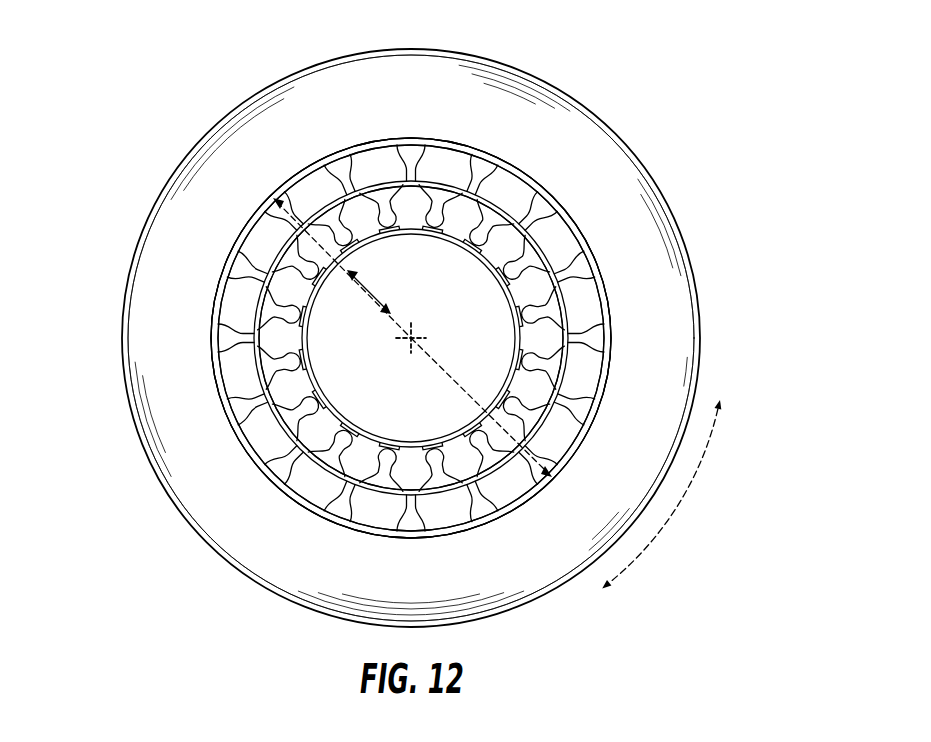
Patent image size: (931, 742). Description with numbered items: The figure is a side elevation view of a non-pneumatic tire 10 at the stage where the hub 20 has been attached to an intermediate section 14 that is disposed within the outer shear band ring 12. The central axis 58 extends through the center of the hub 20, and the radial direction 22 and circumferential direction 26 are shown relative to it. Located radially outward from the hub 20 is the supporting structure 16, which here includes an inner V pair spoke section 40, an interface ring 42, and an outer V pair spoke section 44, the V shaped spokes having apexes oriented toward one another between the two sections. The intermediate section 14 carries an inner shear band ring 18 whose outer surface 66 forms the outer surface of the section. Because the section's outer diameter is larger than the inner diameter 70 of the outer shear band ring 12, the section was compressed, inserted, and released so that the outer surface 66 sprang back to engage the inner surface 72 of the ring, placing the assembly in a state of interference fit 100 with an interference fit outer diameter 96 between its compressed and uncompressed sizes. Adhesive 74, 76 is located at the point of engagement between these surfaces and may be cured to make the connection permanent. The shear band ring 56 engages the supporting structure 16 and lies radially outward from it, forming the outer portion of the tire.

The non-pneumatic tire 10 is at (168, 78).
The outer shear band ring 12 is at (510, 578).
The intermediate section 14 is at (370, 536).
The supporting structure 16 is at (508, 176).
The inner shear band ring 18 is at (262, 462).
The hub 20 is at (310, 364).
The radial direction 22 is at (373, 290).
The circumferential direction 26 is at (694, 527).
The inner V pair spoke section 40 is at (346, 437).
The interface ring 42 is at (538, 245).
The outer V pair spoke section 44 is at (592, 312).
The shear band ring 56 is at (183, 244).
The central axis 58 is at (417, 338).
The outer surface 66 is at (456, 143).
The inner diameter 70 is at (481, 407).
The inner surface 72 is at (260, 445).
The adhesive 74 is at (612, 324).
The adhesive 76 is at (411, 338).
The interference fit outer diameter 96 is at (287, 212).
The interference fit 100 is at (403, 137).